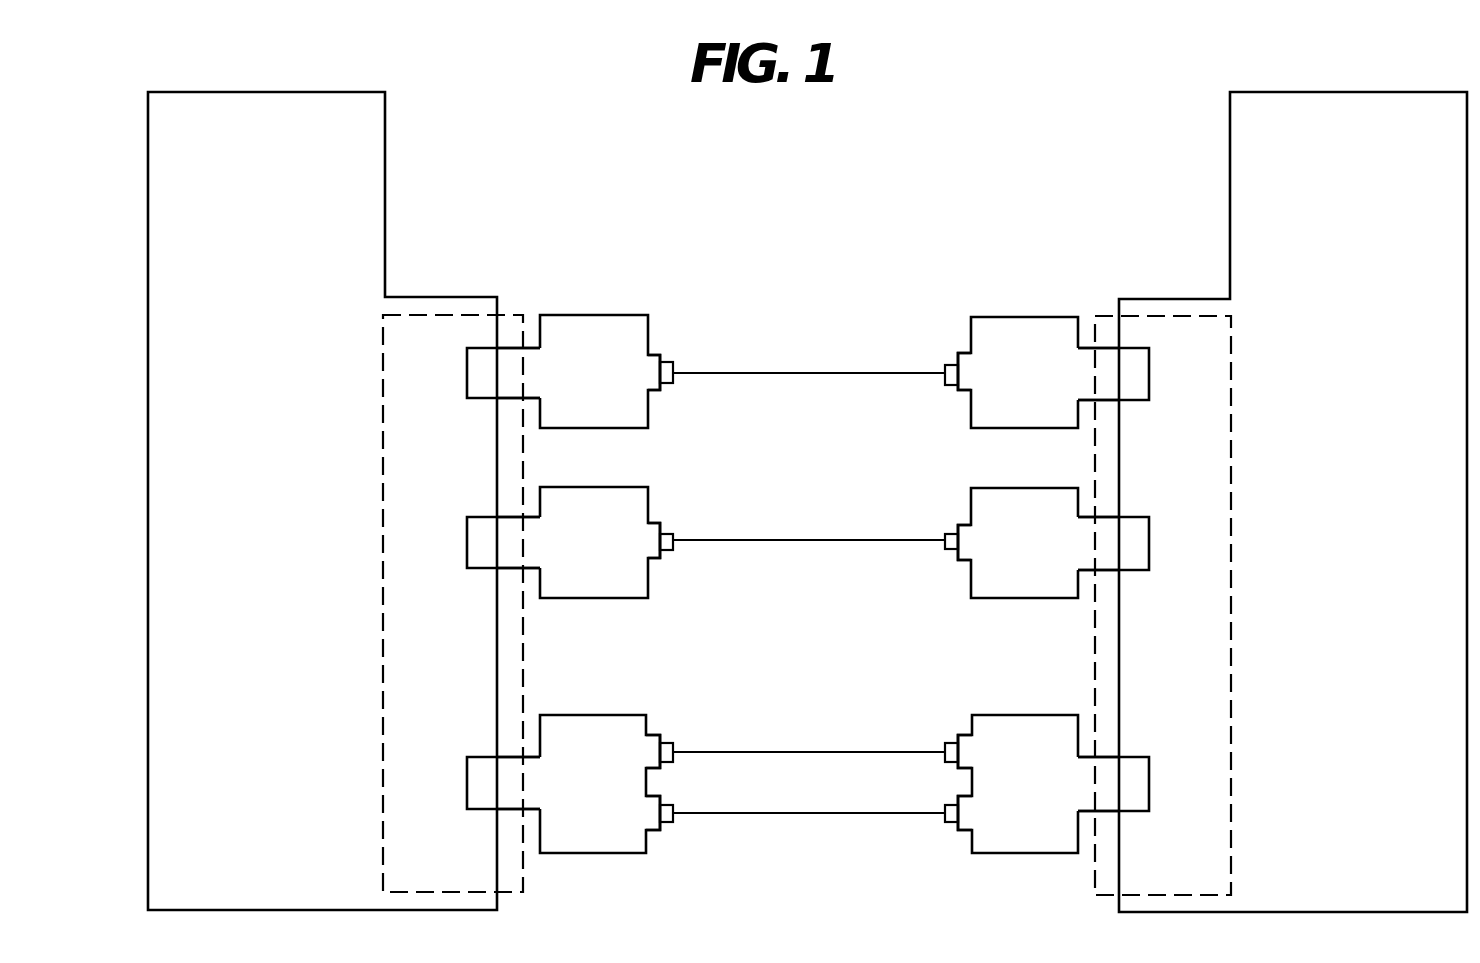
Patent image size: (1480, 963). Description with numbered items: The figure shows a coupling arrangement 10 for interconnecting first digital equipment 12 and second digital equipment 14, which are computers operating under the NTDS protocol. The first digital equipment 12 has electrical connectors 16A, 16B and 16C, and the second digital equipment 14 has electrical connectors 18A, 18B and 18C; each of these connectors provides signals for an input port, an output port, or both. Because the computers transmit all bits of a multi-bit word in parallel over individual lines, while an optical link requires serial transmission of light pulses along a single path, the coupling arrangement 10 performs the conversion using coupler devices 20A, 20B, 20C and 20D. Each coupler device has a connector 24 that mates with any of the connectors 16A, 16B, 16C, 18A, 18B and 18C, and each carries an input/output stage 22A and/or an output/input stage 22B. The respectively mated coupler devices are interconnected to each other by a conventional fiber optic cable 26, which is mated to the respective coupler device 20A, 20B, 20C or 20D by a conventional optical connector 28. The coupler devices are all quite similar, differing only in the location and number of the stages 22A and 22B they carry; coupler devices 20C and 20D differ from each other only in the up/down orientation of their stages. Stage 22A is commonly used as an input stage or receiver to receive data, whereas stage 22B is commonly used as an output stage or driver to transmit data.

The coupling arrangement 10 is at (1010, 199).
The first digital equipment 12 is at (1310, 92).
The second digital equipment 14 is at (305, 92).
The electrical connector 16A is at (1150, 382).
The electrical connector 16B is at (1150, 550).
The electrical connector 16C is at (1150, 776).
The electrical connector 18A is at (467, 385).
The electrical connector 18B is at (467, 555).
The electrical connector 18C is at (467, 776).
The coupler device 20A is at (1000, 317).
The coupler device 20B is at (597, 315).
The coupler device 20C is at (1005, 715).
The coupler device 20D is at (608, 715).
The input/output stage 22A is at (960, 357).
The output/input stage 22B is at (655, 355).
The connector 24 is at (531, 348).
The fiber optic cable 26 is at (810, 374).
The optical connector 28 is at (675, 363).